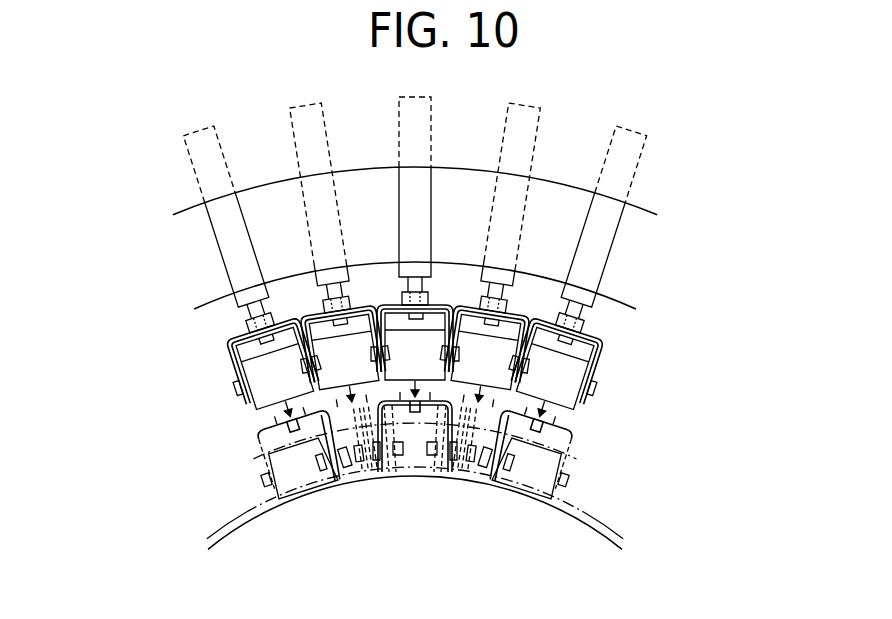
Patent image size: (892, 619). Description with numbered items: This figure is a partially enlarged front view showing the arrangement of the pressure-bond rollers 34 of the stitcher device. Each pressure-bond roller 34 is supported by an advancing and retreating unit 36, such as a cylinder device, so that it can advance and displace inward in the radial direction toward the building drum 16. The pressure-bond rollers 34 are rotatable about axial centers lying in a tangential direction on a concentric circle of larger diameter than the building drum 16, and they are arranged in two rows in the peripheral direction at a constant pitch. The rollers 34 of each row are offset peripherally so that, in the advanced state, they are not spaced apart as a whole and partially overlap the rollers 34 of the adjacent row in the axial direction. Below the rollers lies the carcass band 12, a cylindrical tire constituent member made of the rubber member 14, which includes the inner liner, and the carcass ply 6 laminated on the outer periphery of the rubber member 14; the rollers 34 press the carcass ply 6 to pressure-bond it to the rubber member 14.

The advancing and retreating unit 36 is at (318, 133).
The pressure-bond roller 34 is at (257, 372).
The building drum 16 is at (550, 510).
The carcass ply 6 is at (607, 522).
The rubber member 14 is at (613, 535).
The carcass band 12 is at (483, 529).